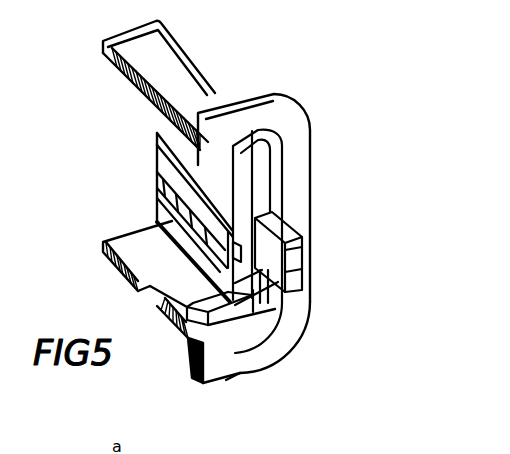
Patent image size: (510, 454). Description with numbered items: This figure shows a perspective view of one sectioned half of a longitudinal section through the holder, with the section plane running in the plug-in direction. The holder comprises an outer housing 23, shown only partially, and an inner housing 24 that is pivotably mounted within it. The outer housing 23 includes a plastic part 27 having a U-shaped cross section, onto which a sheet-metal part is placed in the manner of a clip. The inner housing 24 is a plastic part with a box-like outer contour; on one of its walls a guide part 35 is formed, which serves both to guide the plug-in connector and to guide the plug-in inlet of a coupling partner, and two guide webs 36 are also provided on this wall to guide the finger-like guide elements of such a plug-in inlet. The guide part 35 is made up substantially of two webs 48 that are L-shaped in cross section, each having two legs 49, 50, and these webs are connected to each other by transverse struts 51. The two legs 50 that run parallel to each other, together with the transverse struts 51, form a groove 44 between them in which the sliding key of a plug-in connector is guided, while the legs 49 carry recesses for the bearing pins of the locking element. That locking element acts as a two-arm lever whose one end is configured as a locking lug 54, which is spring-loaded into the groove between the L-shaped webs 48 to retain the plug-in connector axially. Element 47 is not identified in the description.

The plastic part 27 is at (213, 98).
The guide webs 36 is at (214, 165).
The guide part 35 is at (233, 190).
The webs 48 is at (157, 200).
The locking lug 54 is at (157, 222).
The inner housing 24 is at (103, 242).
The outer housing 23 is at (160, 289).
The pad 47 is at (160, 298).
The transverse struts 51 is at (305, 262).
The legs 50 is at (245, 270).
The groove 44 is at (284, 287).
The legs 49 is at (253, 312).